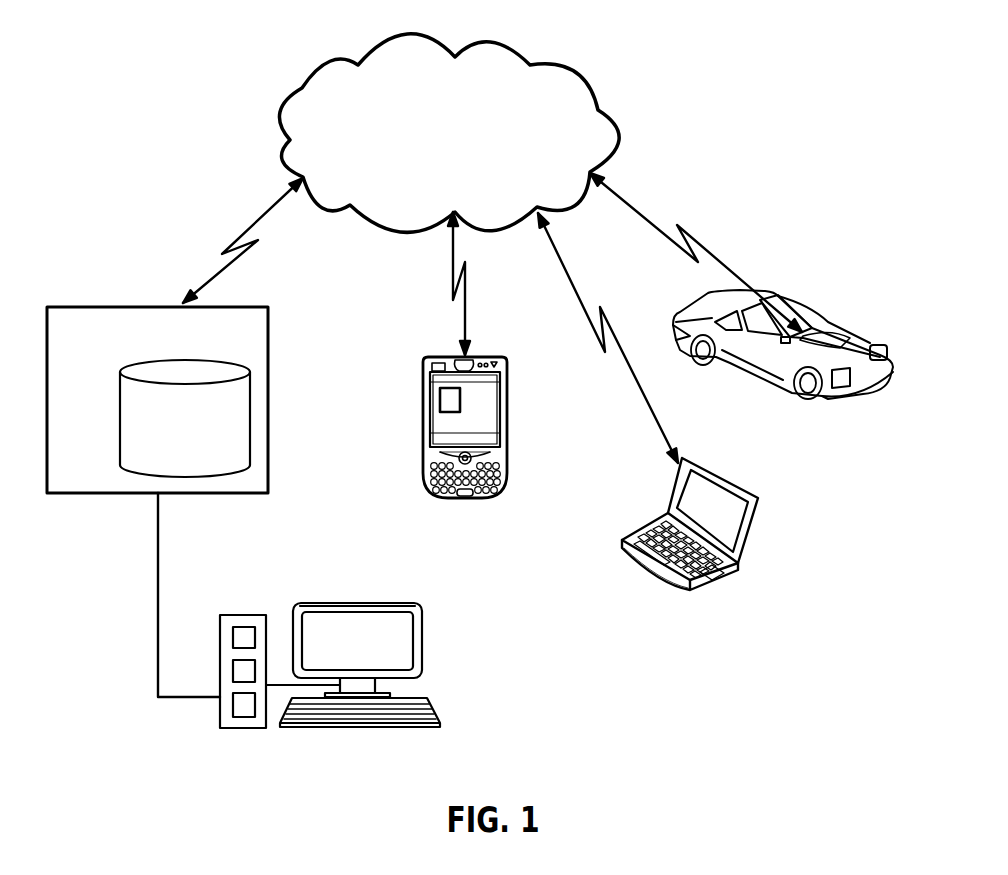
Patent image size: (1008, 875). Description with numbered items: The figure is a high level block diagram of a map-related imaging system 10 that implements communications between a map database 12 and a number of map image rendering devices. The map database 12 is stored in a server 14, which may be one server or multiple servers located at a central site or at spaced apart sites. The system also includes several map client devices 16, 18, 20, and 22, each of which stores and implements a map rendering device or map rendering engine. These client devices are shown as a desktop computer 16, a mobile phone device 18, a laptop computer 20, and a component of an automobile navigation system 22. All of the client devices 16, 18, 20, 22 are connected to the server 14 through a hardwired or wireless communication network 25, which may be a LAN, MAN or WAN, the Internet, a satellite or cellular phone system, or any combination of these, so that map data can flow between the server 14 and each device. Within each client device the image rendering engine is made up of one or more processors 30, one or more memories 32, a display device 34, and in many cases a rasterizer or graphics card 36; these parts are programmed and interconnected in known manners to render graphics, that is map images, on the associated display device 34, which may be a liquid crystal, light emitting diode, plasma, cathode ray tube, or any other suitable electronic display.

The map-related imaging system 10 is at (213, 148).
The map database 12 is at (251, 410).
The server 14 is at (103, 306).
The map client device 16 is at (433, 637).
The map client device 18 is at (505, 352).
The map client device 20 is at (762, 542).
The map client device 22 is at (883, 402).
The communication network 25 is at (505, 42).
The processor 30 is at (233, 635).
The memory 32 is at (233, 670).
The display device 34 is at (353, 622).
The rasterizer or graphics card 36 is at (233, 708).